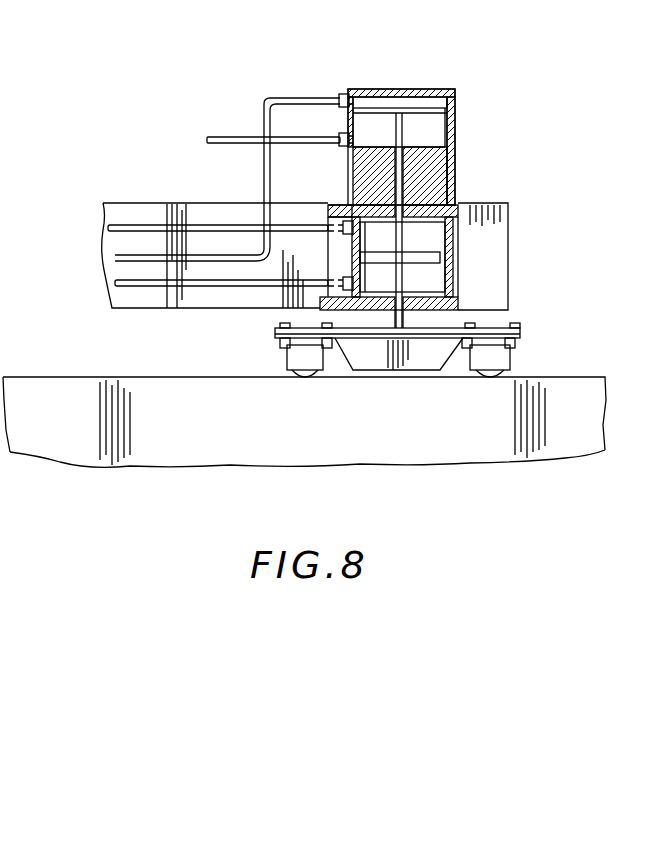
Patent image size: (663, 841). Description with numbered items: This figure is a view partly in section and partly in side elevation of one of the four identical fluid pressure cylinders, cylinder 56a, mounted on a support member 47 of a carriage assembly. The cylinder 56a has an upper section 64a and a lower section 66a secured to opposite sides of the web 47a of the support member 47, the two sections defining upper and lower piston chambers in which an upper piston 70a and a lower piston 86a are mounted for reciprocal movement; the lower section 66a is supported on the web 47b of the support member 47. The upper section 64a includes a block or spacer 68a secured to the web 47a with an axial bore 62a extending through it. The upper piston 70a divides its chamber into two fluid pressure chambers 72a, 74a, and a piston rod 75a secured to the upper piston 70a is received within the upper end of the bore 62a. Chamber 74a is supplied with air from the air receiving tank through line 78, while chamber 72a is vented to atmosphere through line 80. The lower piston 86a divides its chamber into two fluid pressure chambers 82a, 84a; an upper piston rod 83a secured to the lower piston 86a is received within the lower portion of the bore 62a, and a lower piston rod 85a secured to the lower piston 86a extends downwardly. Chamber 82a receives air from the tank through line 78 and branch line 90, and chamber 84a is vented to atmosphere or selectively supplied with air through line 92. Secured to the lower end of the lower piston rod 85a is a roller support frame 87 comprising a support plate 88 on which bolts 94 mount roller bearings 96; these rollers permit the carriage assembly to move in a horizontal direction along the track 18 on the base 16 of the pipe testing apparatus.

The base 16 is at (118, 468).
The track 18 is at (58, 377).
The support member 47 is at (142, 203).
The web 47a is at (337, 205).
The web 47b is at (372, 312).
The cylinder 56a is at (424, 165).
The axial bore 62a is at (448, 168).
The upper section 64a is at (455, 94).
The lower section 66a is at (422, 288).
The block or spacer 68a is at (456, 184).
The upper piston 70a is at (372, 108).
The fluid pressure chamber 72a is at (428, 103).
The fluid pressure chamber 74a is at (376, 130).
The piston rod 75a is at (402, 128).
The line 78 is at (232, 137).
The line 80 is at (270, 98).
The fluid pressure chamber 82a is at (422, 240).
The upper piston rod 83a is at (458, 206).
The pressure chamber 84a is at (432, 280).
The lower piston rod 85a is at (407, 314).
The lower piston 86a is at (363, 257).
The roller support frame 87 is at (394, 373).
The support plate 88 is at (520, 333).
The branch line 90 is at (120, 225).
The line 92 is at (212, 288).
The bolts 94 is at (326, 322).
The roller bearings 96 is at (300, 378).